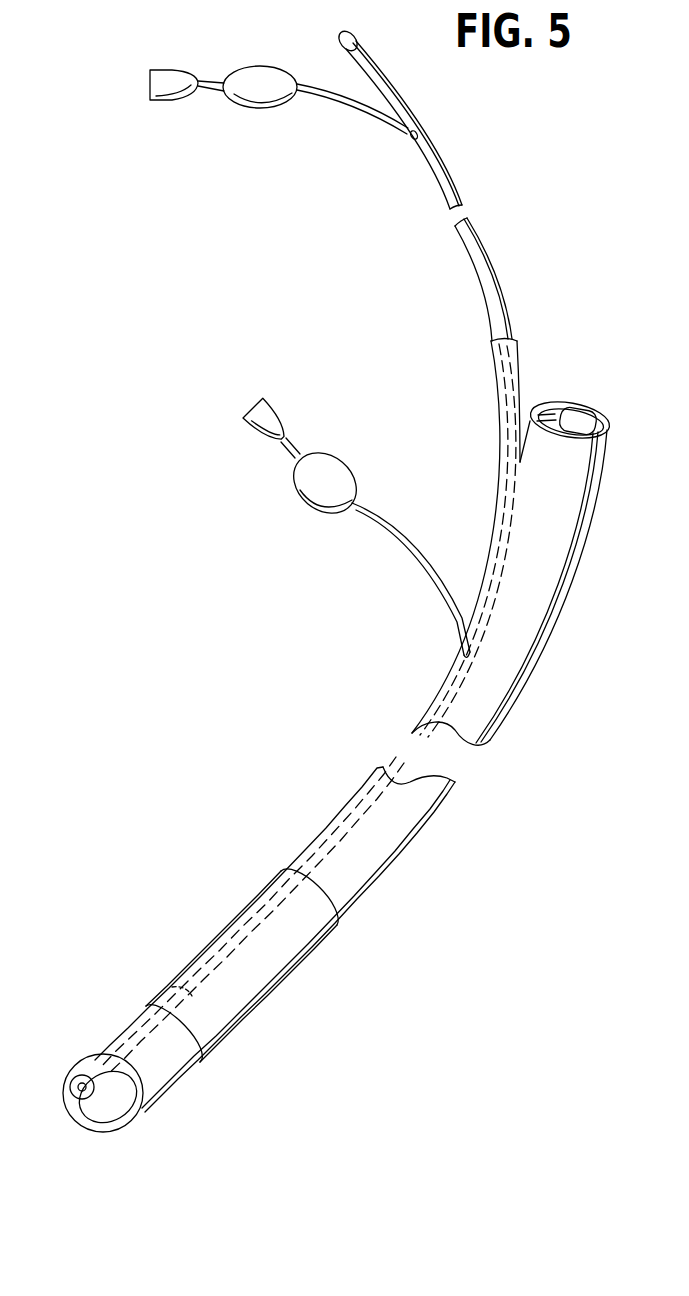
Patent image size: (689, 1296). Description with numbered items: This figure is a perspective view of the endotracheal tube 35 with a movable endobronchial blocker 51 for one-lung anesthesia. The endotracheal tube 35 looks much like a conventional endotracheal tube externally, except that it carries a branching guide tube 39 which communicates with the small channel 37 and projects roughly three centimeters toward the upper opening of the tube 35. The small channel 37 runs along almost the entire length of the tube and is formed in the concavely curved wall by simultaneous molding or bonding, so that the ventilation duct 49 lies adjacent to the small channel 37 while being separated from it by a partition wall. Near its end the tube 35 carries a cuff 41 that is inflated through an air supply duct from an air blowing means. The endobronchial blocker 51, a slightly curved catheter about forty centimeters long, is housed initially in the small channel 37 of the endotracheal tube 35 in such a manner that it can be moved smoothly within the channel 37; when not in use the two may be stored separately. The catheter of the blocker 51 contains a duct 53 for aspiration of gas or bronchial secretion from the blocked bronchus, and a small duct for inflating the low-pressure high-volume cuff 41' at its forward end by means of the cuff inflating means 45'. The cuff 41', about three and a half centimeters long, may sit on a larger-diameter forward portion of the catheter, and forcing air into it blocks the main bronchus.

The endotracheal tube 35 is at (512, 667).
The small channel 37 is at (357, 818).
The branching guide tube 39 is at (515, 360).
The cuff 41 is at (308, 728).
The low-pressure high-volume cuff 41' is at (144, 993).
The cuff inflating means 45' is at (284, 75).
The ventilation duct 49 is at (582, 418).
The endobronchial blocker 51 is at (488, 268).
The duct 53 is at (80, 1075).